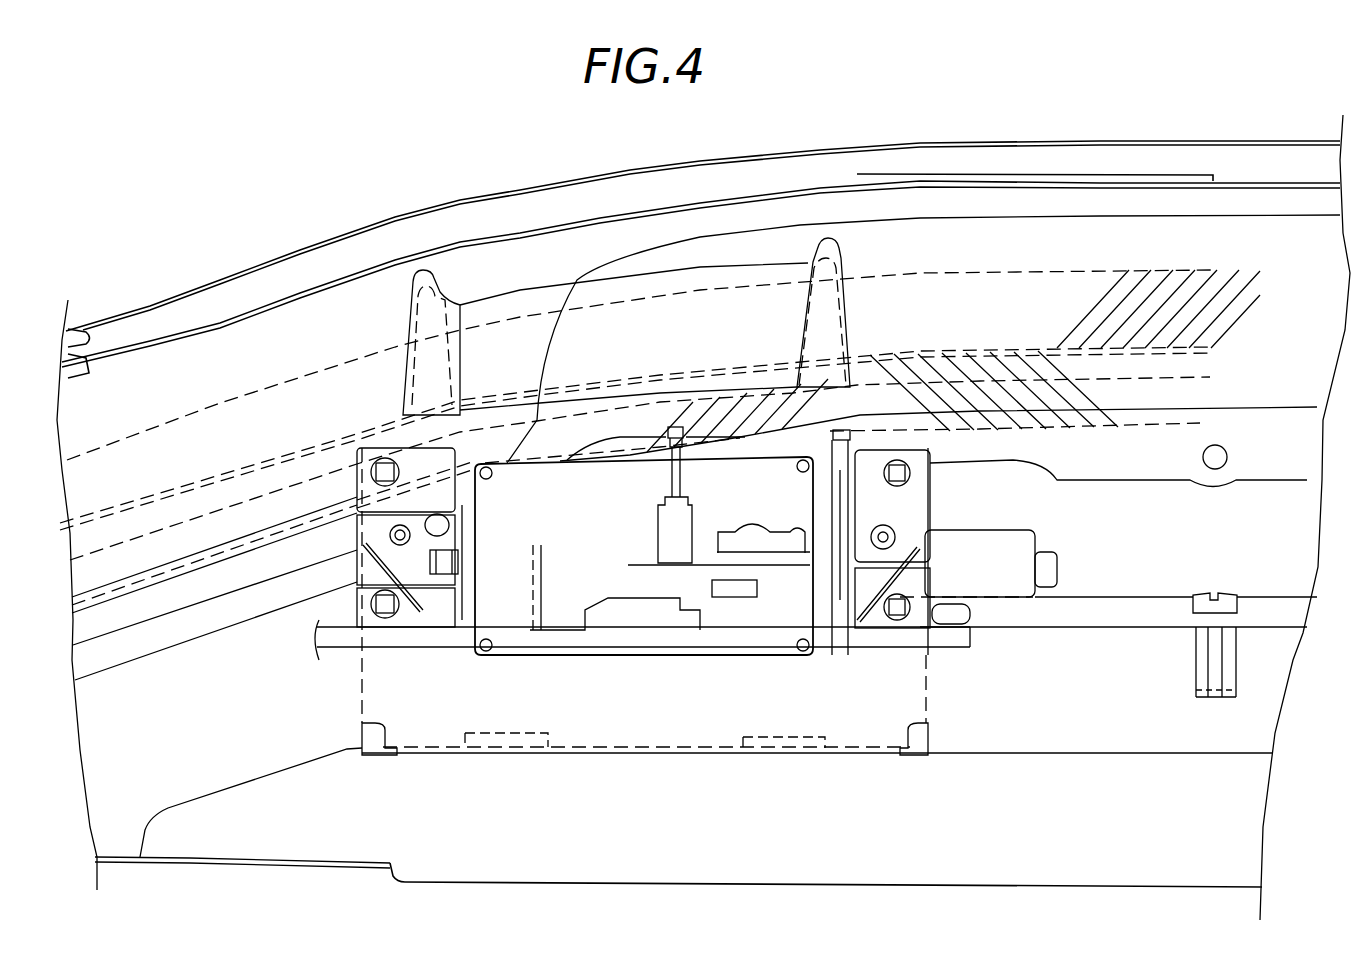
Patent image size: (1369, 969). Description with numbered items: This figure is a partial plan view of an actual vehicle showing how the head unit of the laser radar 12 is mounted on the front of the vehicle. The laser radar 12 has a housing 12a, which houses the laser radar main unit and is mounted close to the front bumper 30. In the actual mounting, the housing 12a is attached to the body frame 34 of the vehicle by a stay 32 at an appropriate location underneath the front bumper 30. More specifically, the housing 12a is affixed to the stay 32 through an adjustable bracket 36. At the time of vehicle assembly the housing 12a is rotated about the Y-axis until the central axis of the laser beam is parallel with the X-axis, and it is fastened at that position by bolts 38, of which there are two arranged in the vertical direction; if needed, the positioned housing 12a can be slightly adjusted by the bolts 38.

The front bumper 30 is at (487, 186).
The laser radar 12 is at (500, 440).
The housing 12a is at (628, 537).
The adjustable bracket 36 is at (390, 558).
The bolts 38 is at (442, 580).
The stay 32 is at (555, 712).
The body frame 34 is at (976, 828).